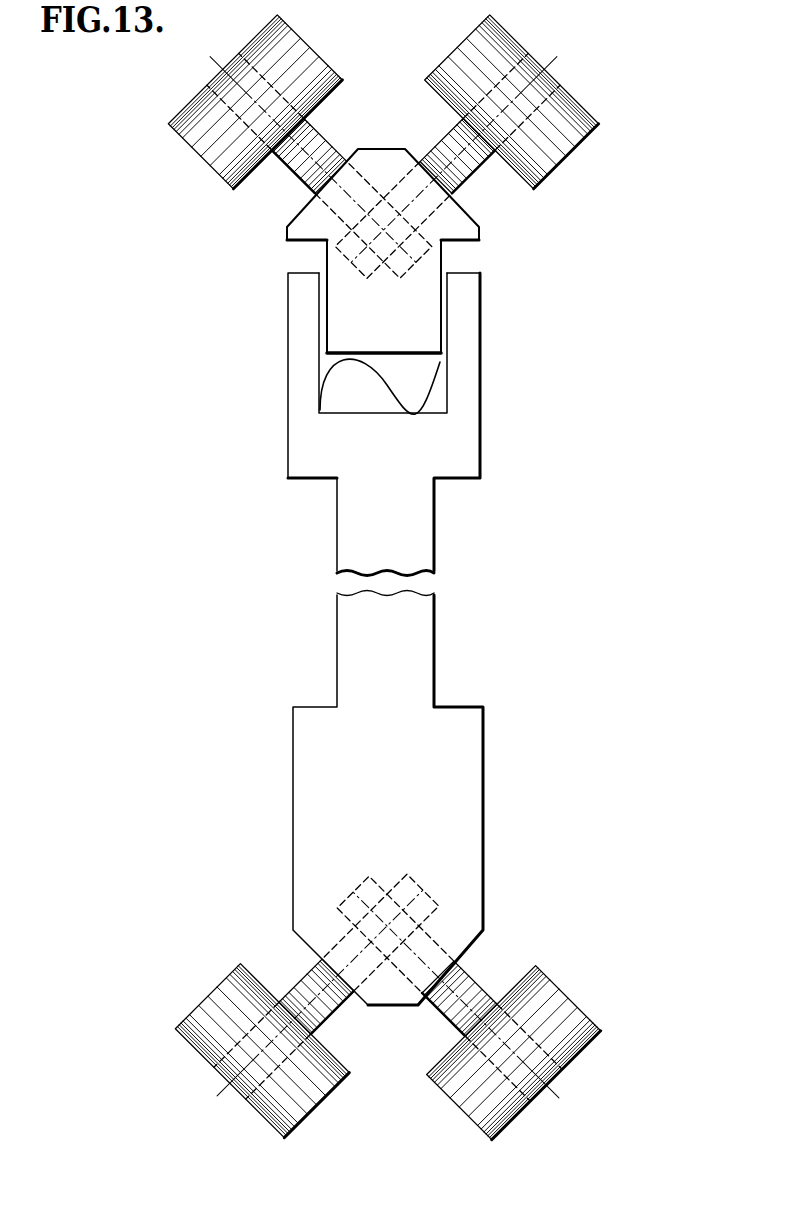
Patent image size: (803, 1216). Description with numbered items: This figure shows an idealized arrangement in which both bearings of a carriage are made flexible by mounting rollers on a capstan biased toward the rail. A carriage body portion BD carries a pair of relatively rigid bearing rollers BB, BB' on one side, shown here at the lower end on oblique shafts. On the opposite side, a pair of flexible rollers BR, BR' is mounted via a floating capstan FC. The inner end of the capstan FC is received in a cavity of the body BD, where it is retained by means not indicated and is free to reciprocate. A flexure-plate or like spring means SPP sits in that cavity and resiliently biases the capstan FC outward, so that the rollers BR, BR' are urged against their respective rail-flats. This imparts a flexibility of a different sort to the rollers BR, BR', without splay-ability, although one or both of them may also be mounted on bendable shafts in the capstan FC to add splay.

The flexible roller BR' is at (294, 159).
The flexible roller BR is at (474, 159).
The floating capstan FC is at (479, 227).
The spring means SPP is at (398, 378).
The carriage body portion BD is at (434, 557).
The rigid bearing roller BB is at (283, 993).
The rigid bearing roller BB' is at (497, 995).